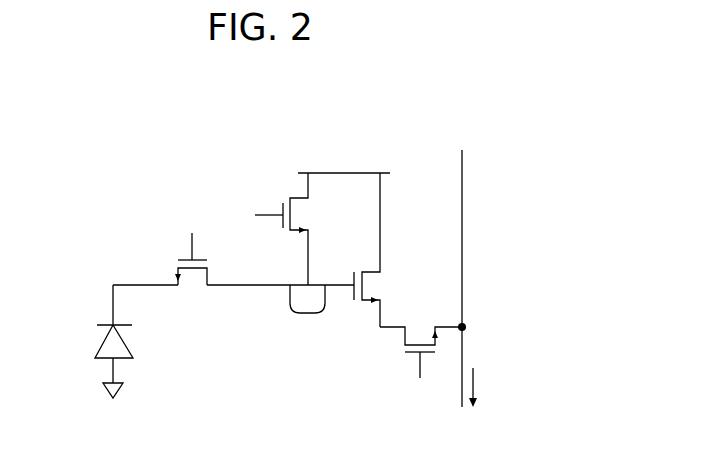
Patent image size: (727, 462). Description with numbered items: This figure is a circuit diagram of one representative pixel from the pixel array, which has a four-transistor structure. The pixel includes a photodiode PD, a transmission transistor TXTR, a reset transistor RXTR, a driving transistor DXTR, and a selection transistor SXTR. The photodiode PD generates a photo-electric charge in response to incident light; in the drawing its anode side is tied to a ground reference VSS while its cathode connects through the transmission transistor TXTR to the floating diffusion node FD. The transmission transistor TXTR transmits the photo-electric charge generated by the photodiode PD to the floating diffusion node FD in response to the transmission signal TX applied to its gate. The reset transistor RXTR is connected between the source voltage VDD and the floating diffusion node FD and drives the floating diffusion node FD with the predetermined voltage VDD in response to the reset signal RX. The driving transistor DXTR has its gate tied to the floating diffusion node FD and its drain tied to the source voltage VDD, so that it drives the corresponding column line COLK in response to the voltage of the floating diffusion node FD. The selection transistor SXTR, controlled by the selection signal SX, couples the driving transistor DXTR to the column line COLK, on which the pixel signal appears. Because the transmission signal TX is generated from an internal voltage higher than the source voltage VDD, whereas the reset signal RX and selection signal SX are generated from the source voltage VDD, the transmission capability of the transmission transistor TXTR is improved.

The transmission transistor TXTR is at (191, 286).
The transmission signal TX is at (191, 233).
The reset transistor RXTR is at (316, 229).
The reset signal RX is at (254, 215).
The source voltage VDD is at (344, 161).
The floating diffusion node FD is at (307, 299).
The driving transistor DXTR is at (388, 250).
The selection transistor SXTR is at (423, 327).
The selection signal SX is at (419, 380).
The column line COLK is at (462, 210).
The photodiode PD is at (126, 334).
The ground voltage VSS is at (113, 406).